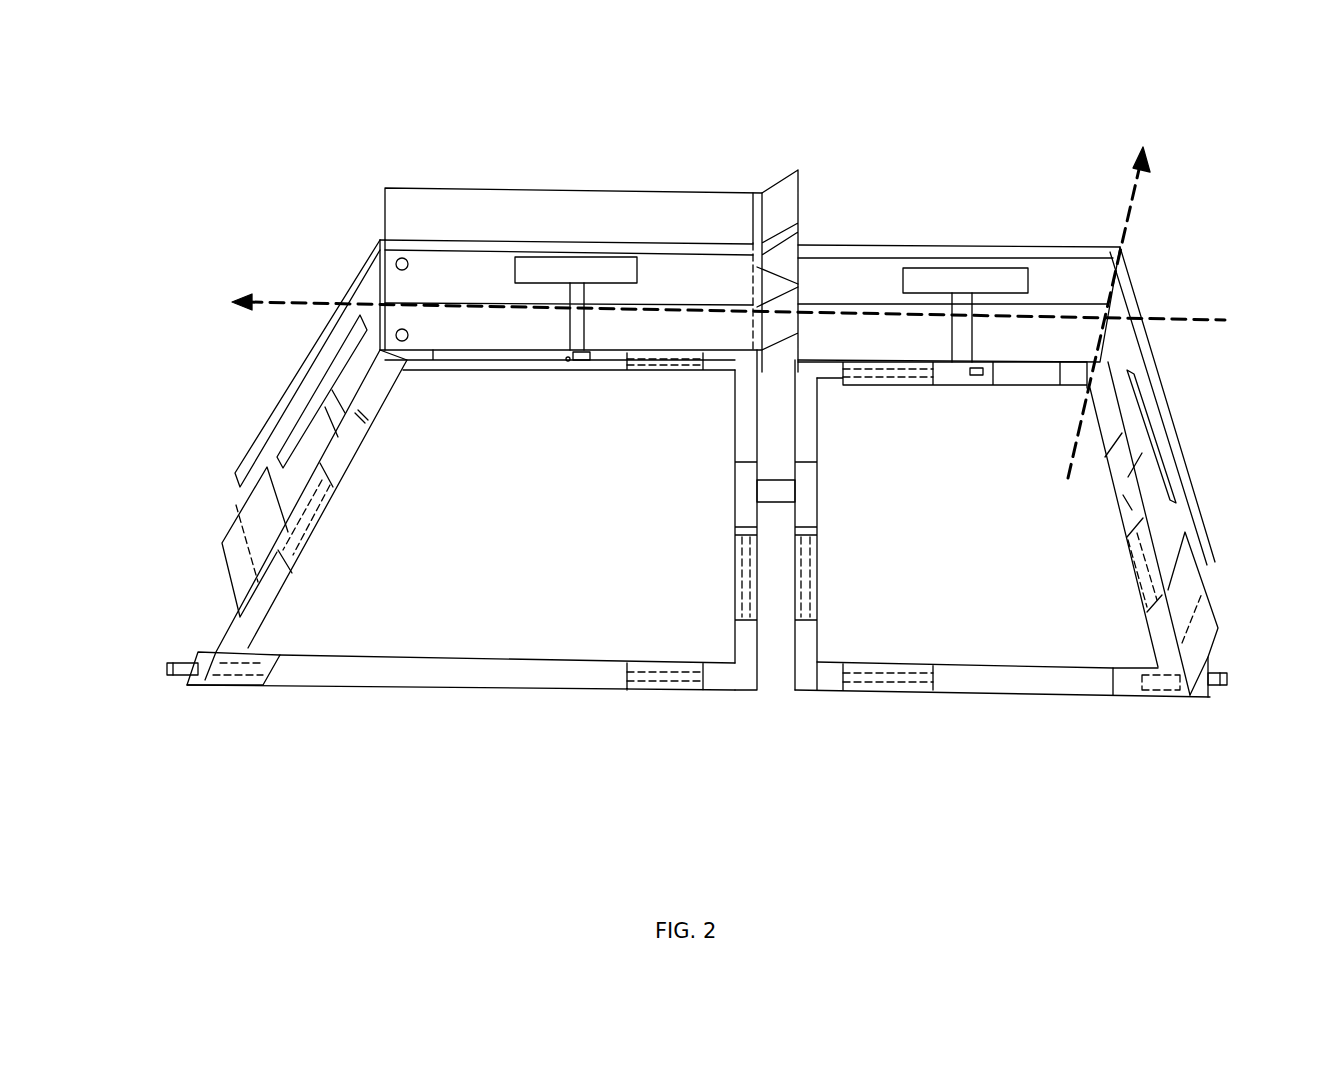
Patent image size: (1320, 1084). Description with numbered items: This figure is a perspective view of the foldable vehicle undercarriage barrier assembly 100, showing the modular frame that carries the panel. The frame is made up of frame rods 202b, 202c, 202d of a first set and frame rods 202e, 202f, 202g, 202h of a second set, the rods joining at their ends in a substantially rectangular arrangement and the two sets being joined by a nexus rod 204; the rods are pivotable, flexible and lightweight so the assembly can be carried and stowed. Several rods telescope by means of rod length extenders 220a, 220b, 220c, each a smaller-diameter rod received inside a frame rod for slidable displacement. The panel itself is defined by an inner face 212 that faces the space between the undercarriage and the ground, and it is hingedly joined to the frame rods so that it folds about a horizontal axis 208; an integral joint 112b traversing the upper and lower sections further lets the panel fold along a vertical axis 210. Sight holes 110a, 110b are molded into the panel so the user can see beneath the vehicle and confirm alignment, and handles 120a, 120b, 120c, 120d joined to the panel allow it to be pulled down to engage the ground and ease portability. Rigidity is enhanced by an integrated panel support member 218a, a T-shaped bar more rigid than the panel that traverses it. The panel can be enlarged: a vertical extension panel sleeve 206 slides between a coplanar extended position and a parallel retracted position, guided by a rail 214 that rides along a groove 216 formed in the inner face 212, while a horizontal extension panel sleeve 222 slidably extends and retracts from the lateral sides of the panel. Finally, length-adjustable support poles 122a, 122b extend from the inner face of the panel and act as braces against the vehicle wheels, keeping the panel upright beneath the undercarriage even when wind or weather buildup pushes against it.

The foldable vehicle undercarriage barrier assembly 100 is at (330, 92).
The sight hole 110a is at (405, 257).
The sight hole 110b is at (1095, 282).
The joint 112b is at (378, 262).
The handle 120a is at (986, 268).
The handle 120b is at (618, 257).
The handle 120c is at (296, 418).
The handle 120d is at (1160, 467).
The support pole 122a is at (1215, 692).
The support pole 122b is at (178, 680).
The frame rod 202b is at (345, 450).
The frame rod 202c is at (570, 362).
The frame rod 202d is at (740, 432).
The frame rod 202e is at (1032, 690).
The frame rod 202f is at (805, 490).
The frame rod 202g is at (978, 380).
The frame rod 202h is at (1110, 483).
The nexus rod 204 is at (770, 503).
The vertical extension panel sleeve 206 is at (532, 197).
The horizontal axis 208 is at (237, 292).
The vertical axis 210 is at (1148, 172).
The inner face 212 is at (571, 295).
The rail 214 is at (762, 192).
The groove 216 is at (798, 285).
The integrated panel support member 218a is at (573, 332).
The rod length extender 220a is at (805, 562).
The rod length extender 220b is at (882, 690).
The rod length extender 220c is at (310, 523).
The horizontal extension panel sleeve 222 is at (1220, 622).